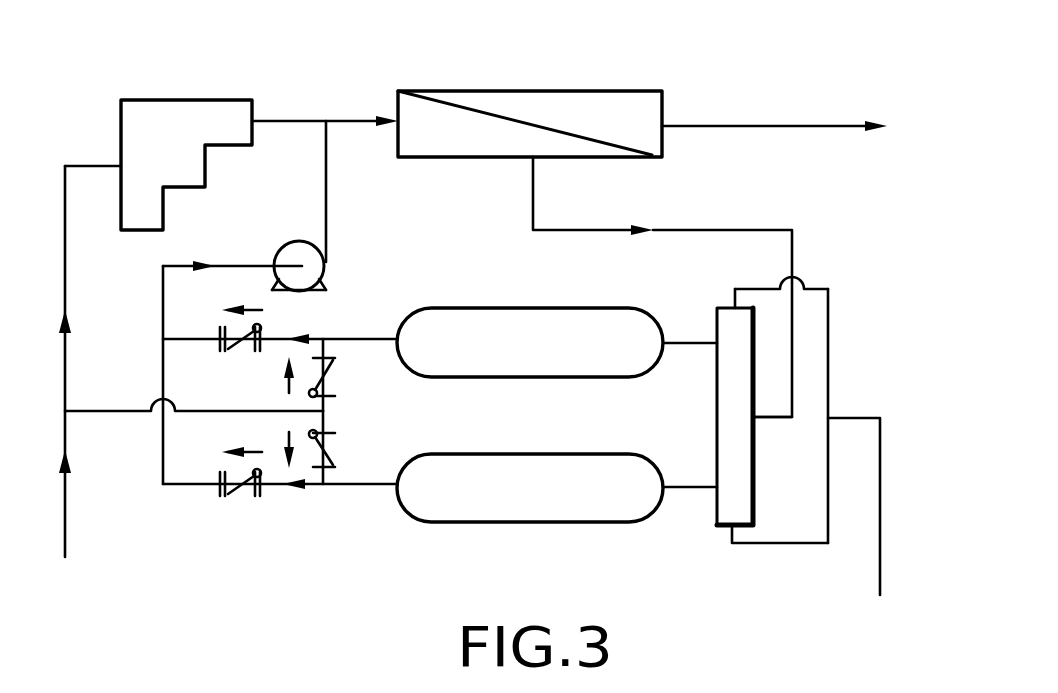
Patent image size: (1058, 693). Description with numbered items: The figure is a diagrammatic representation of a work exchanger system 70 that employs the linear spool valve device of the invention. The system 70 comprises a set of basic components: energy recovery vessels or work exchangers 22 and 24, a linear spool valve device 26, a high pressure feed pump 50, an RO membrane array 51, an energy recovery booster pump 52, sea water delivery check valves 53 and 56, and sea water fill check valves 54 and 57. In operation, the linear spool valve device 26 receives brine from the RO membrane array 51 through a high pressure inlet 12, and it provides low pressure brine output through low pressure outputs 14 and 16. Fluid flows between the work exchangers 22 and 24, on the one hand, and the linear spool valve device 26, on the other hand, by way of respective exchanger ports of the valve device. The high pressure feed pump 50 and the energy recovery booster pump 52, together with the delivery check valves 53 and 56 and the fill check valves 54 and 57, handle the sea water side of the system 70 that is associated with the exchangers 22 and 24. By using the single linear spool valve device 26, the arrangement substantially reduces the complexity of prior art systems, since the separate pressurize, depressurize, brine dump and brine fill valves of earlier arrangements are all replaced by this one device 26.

The system 70 is at (706, 50).
The high pressure feed pump 50 is at (148, 98).
The RO membrane array 51 is at (428, 90).
The energy recovery booster pump 52 is at (285, 242).
The sea water delivery check valve 53 is at (238, 350).
The sea water fill check valve 54 is at (328, 377).
The sea water delivery check valve 56 is at (242, 495).
The sea water fill check valve 57 is at (327, 453).
The work exchanger 22 is at (413, 308).
The work exchanger 24 is at (413, 517).
The linear spool valve device 26 is at (717, 405).
The low pressure output 14 is at (812, 292).
The high pressure inlet 12 is at (777, 420).
The low pressure output 16 is at (777, 540).